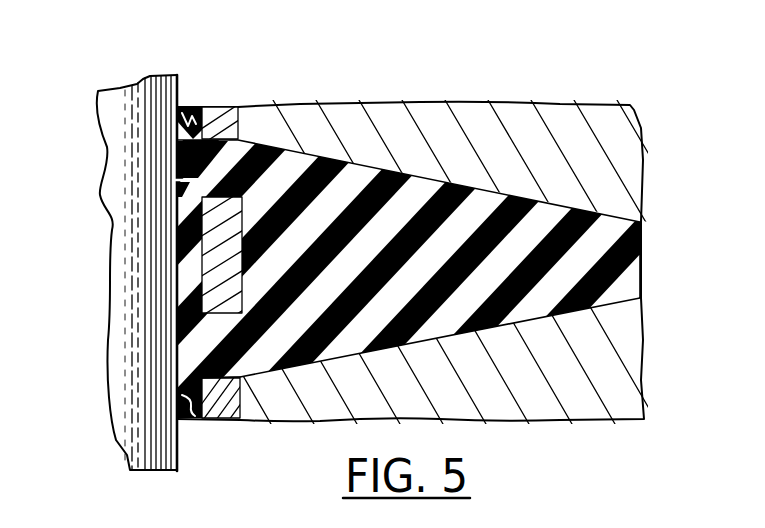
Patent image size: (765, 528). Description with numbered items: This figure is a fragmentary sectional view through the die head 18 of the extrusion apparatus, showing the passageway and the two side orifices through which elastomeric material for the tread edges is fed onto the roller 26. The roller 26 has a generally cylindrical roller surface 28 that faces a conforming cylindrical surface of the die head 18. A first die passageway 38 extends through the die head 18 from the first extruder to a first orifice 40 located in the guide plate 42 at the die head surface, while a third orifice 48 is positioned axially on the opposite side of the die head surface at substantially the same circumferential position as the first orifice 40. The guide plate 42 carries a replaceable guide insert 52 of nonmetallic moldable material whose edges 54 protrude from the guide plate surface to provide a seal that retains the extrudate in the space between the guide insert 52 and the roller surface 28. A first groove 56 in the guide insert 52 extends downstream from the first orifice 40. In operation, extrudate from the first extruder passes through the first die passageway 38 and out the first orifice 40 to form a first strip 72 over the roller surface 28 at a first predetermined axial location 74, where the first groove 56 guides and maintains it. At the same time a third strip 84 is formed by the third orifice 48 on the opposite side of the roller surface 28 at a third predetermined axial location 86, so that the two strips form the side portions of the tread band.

The die head 18 is at (588, 113).
The roller 26 is at (117, 211).
The cylindrical roller surface 28 is at (140, 128).
The first die passageway 38 is at (382, 257).
The first orifice 40 is at (382, 257).
The guide plate 42 is at (243, 410).
The third orifice 48 is at (222, 150).
The guide insert 52 is at (193, 110).
The edges of the guide insert 54 is at (215, 248).
The first groove 56 is at (182, 311).
The first strip 72 is at (149, 393).
The first predetermined axial location 74 is at (190, 343).
The third strip 84 is at (140, 156).
The third predetermined axial location 86 is at (203, 180).